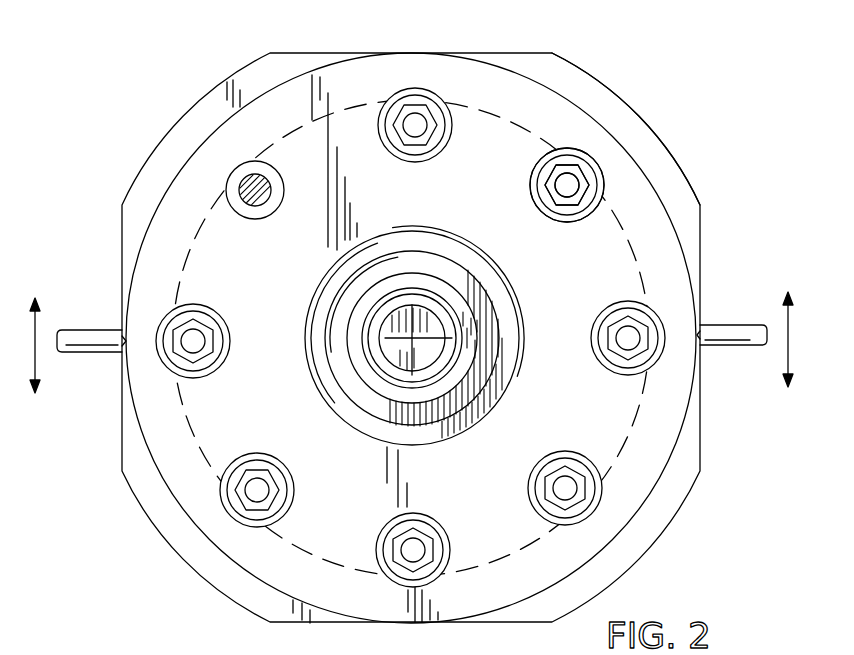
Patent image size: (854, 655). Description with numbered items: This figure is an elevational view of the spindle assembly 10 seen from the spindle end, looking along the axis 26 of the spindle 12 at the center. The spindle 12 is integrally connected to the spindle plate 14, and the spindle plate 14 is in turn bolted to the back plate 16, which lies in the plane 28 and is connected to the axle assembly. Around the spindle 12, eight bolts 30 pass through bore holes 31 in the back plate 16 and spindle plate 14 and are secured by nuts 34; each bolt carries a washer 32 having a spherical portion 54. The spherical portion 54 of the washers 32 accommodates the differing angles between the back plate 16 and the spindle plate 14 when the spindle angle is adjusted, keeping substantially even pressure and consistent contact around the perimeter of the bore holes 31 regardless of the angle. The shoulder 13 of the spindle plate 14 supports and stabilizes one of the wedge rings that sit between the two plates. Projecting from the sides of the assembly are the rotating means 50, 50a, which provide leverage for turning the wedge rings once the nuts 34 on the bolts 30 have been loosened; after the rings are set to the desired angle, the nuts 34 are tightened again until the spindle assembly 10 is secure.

The spindle assembly 10 is at (730, 47).
The spindle 12 is at (400, 360).
The shoulder 13 is at (200, 458).
The spindle plate 14 is at (640, 483).
The back plate 16 is at (609, 82).
The axis 26 is at (416, 336).
The plane 28 is at (615, 110).
The bolt 30 is at (579, 182).
The bore hole 31 is at (332, 349).
The washer 32 is at (607, 211).
The nut 34 is at (589, 188).
The rotating means 50 is at (88, 347).
The rotating means 50a is at (733, 338).
The spherical portion 54 is at (568, 148).